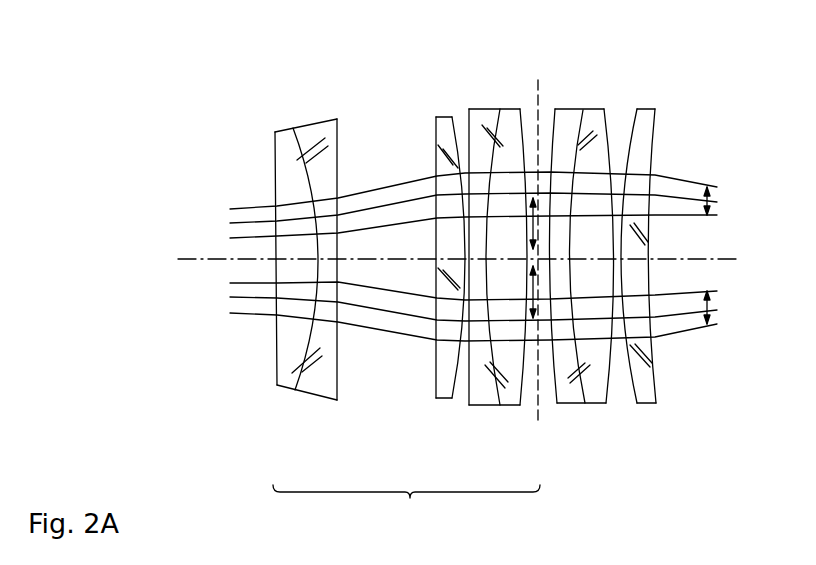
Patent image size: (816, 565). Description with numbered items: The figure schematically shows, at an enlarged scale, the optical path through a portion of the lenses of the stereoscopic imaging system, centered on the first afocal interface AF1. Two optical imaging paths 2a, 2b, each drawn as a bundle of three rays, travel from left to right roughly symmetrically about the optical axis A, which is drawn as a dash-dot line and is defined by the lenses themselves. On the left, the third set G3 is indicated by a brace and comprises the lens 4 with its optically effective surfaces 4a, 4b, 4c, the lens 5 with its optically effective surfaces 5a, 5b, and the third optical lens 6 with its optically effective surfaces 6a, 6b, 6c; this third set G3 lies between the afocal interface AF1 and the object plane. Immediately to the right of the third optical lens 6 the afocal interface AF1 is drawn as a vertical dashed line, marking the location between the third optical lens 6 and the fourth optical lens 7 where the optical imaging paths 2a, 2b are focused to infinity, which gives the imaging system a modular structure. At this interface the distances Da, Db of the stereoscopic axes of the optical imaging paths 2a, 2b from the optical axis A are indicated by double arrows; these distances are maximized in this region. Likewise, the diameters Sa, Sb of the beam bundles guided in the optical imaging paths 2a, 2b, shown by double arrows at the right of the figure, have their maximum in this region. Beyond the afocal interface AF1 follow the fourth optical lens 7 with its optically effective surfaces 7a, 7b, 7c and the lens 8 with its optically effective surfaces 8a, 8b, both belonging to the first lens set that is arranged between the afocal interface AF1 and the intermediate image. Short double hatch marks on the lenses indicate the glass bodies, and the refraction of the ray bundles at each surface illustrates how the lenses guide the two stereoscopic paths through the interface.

The optical axis A is at (451, 260).
The optical imaging path 2a is at (222, 297).
The optical imaging path 2b is at (222, 223).
The third set G3 is at (382, 273).
The lens 4 is at (290, 270).
The optically effective surface 4a is at (274, 150).
The optically effective surface 4b is at (292, 131).
The optically effective surface 4c is at (338, 130).
The lens 5 is at (424, 269).
The optically effective surface 5a is at (433, 130).
The optically effective surface 5b is at (460, 118).
The third optical lens 6 is at (493, 248).
The optically effective surface 6a is at (460, 118).
The optically effective surface 6b is at (497, 108).
The optically effective surface 6c is at (520, 117).
The afocal interface AF1 is at (538, 425).
The distance Db is at (519, 223).
The distance Da is at (519, 292).
The fourth optical lens 7 is at (581, 259).
The optically effective surface 7a is at (554, 117).
The optically effective surface 7b is at (583, 110).
The optically effective surface 7c is at (604, 115).
The lens 8 is at (667, 267).
The optically effective surface 8a is at (637, 112).
The optically effective surface 8b is at (657, 120).
The diameter of beam bundle Sb is at (712, 200).
The diameter of beam bundle Sa is at (712, 310).